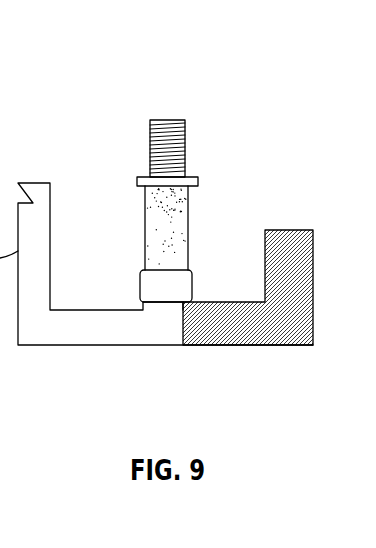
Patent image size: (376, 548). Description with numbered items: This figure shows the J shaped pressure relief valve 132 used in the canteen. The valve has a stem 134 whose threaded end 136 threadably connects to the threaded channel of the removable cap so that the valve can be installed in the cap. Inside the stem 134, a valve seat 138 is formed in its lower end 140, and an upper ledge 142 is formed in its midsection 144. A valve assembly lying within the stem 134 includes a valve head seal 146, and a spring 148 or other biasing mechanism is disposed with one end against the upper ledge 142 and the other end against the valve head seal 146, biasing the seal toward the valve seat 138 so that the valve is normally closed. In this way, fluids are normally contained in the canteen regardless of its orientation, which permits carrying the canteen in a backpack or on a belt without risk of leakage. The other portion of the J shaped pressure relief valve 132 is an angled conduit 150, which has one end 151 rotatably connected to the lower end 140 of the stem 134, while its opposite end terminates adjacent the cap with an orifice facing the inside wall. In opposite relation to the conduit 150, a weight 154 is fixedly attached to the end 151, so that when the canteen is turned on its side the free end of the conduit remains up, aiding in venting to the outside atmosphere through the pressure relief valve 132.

The J shaped pressure relief valve 132 is at (105, 84).
The stem 134 is at (197, 181).
The threaded end 136 is at (188, 140).
The valve seat 138 is at (186, 258).
The lower end 140 is at (132, 286).
The upper ledge 142 is at (133, 188).
The midsection 144 is at (190, 201).
The valve head seal 146 is at (145, 213).
The spring 148 is at (192, 190).
The angled conduit 150 is at (67, 355).
The end 151 is at (170, 290).
The weight 154 is at (250, 346).